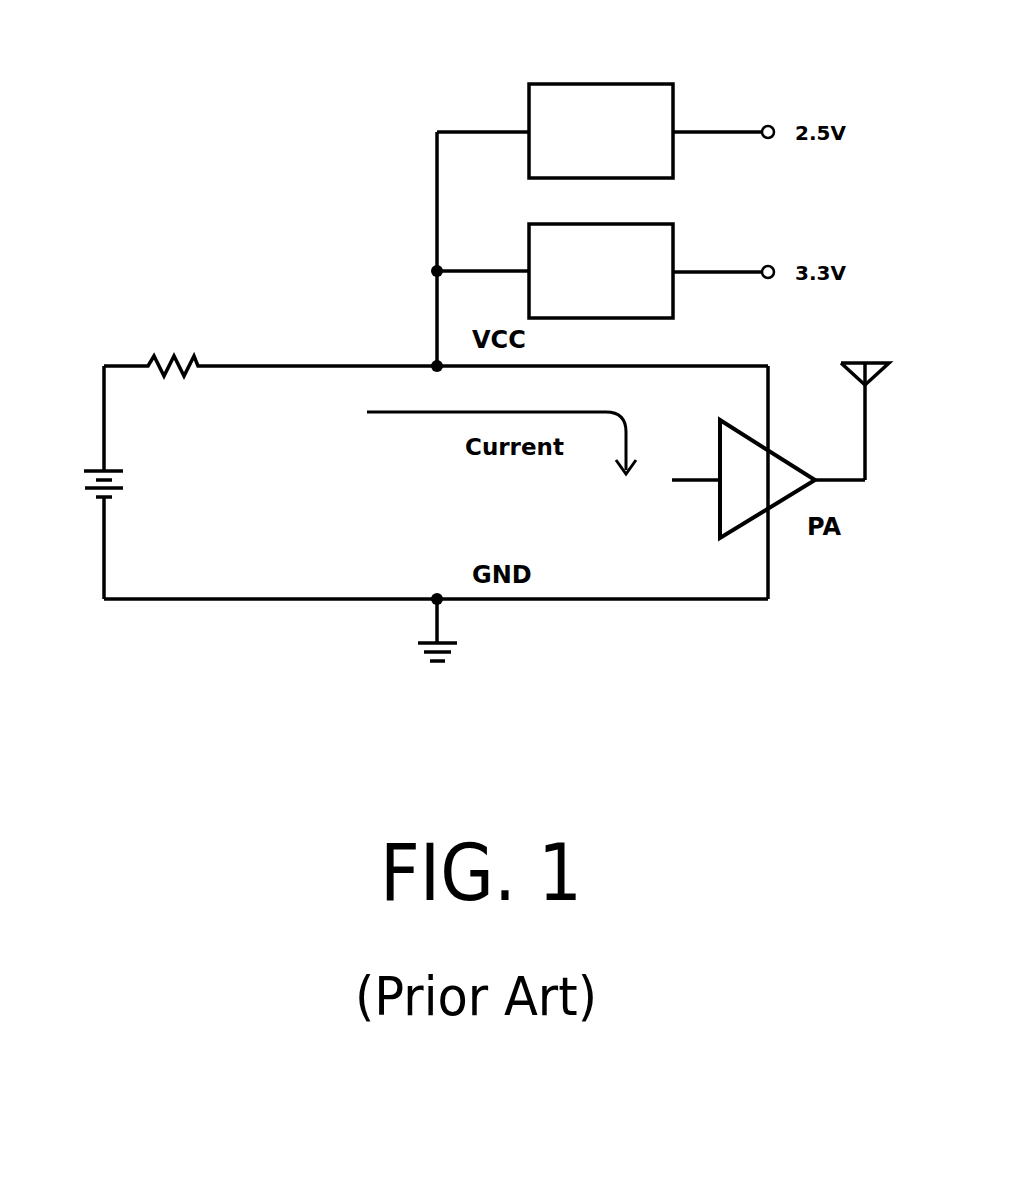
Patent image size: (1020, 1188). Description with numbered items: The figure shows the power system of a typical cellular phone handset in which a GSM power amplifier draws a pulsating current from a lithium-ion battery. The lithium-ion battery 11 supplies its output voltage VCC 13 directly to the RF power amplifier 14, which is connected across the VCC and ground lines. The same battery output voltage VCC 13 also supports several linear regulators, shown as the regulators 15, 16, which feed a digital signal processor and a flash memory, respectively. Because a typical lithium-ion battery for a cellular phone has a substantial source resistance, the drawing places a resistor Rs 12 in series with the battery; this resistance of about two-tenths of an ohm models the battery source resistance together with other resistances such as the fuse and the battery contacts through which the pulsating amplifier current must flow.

The lithium-ion battery 11 is at (82, 478).
The resistor Rs 12 is at (172, 353).
The output voltage VCC 13 is at (340, 365).
The RF power amplifier 14 is at (720, 437).
The linear regulator 15 is at (646, 84).
The linear regulator 16 is at (646, 224).